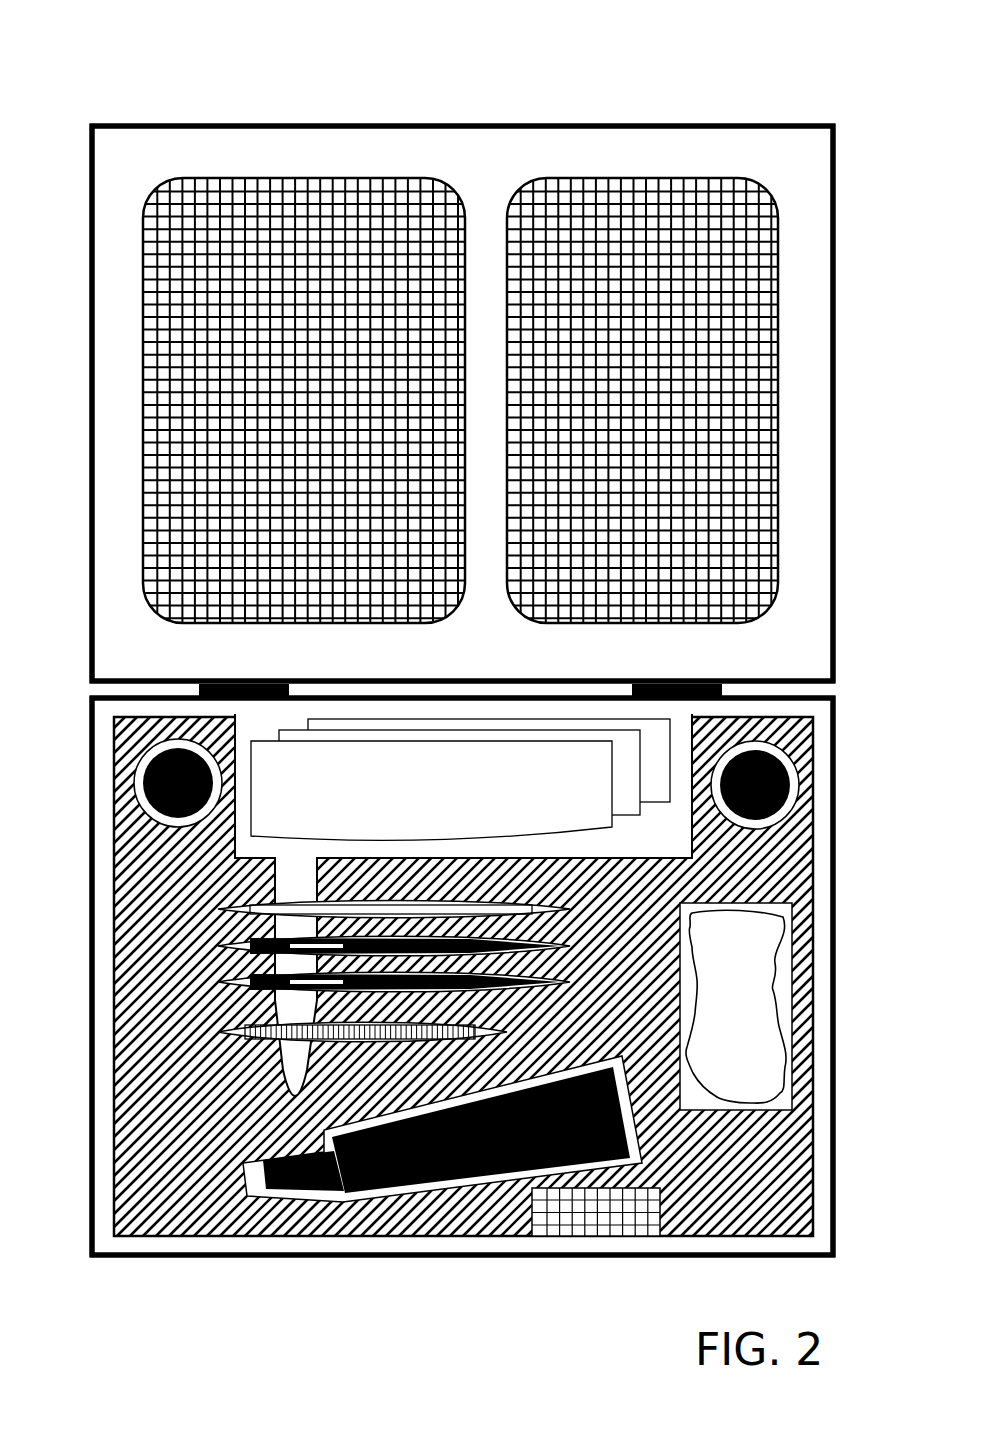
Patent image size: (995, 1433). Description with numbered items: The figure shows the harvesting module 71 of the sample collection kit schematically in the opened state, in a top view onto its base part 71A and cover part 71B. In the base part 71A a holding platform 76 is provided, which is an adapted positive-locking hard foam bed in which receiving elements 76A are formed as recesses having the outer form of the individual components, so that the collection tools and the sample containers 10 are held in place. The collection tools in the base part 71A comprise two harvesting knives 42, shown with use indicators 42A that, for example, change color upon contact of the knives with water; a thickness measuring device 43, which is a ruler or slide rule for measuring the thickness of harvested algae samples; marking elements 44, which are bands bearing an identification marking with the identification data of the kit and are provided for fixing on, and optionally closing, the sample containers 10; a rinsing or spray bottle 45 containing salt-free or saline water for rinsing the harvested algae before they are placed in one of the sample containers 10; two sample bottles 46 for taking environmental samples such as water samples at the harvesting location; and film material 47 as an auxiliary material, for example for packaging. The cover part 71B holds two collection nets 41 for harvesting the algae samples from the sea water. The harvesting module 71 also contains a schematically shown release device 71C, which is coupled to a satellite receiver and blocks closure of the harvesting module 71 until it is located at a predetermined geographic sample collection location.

The harvesting module 71 is at (765, 95).
The base part 71A is at (157, 1257).
The cover part 71B is at (155, 125).
The release device 71C is at (580, 1225).
The collection nets 41 is at (573, 177).
The sample containers 10 is at (357, 750).
The marking elements 44 is at (380, 905).
The use indicators 42A is at (225, 946).
The harvesting knives 42 is at (225, 984).
The thickness measuring device 43 is at (218, 1036).
The rinsing bottle 45 is at (428, 1182).
The sample bottles 46 is at (788, 767).
The film material 47 is at (747, 1000).
The holding platform 76 is at (287, 1228).
The receiving elements 76A is at (635, 1130).